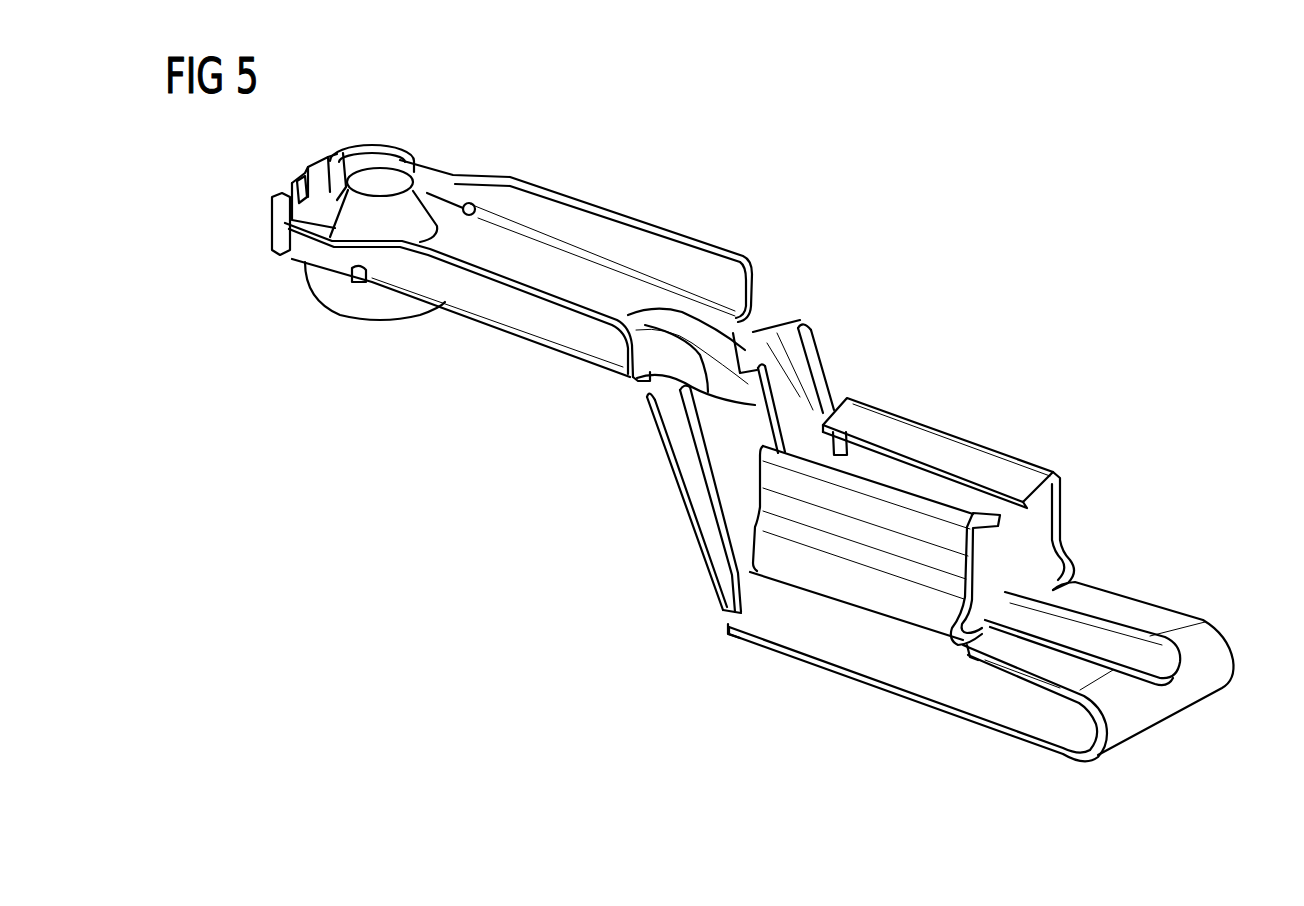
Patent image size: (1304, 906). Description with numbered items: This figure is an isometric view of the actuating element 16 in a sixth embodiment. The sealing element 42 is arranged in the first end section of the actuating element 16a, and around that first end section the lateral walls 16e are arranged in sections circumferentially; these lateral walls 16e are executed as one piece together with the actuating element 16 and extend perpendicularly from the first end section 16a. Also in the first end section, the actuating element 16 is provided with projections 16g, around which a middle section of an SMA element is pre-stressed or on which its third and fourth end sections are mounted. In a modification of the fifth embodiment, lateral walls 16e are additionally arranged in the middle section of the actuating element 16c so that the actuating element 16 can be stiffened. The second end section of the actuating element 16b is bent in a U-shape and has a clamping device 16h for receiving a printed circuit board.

The actuating element 16 is at (808, 268).
The first end section of the actuating element 16a is at (560, 270).
The second end section of the actuating element 16b is at (1180, 592).
The middle section of the actuating element 16c is at (806, 323).
The lateral walls 16e is at (637, 223).
The projections 16g is at (363, 147).
The clamping device 16h is at (975, 426).
The sealing element 42 is at (378, 181).